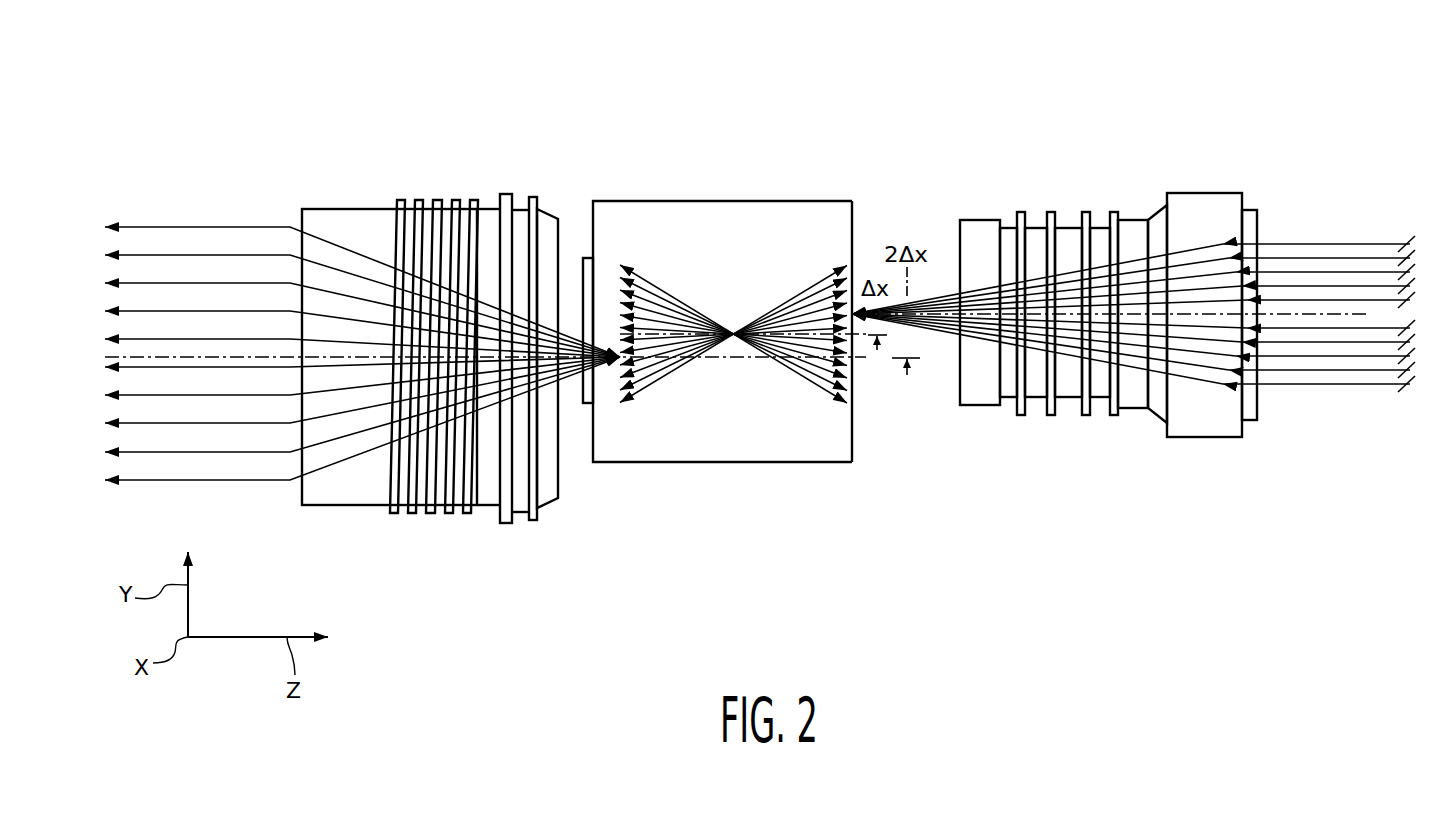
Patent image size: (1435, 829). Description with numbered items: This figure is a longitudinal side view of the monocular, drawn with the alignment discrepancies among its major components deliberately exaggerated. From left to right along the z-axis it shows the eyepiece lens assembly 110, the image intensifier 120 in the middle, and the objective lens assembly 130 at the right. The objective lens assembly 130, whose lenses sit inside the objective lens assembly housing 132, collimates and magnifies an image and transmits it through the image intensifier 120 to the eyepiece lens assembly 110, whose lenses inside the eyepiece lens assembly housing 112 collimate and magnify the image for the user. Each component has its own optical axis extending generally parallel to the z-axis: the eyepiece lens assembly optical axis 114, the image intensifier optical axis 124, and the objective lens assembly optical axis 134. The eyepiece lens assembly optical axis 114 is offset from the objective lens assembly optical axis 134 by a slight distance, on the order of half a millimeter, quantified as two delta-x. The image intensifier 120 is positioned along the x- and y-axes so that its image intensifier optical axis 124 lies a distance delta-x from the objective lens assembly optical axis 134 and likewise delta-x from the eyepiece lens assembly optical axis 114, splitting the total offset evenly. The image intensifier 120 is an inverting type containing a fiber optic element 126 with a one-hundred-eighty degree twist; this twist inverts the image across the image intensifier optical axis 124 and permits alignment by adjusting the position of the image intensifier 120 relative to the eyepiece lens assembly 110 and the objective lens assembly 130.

The eyepiece lens assembly 110 is at (352, 209).
The eyepiece lens assembly housing 112 is at (490, 209).
The eyepiece lens assembly optical axis 114 is at (248, 352).
The image intensifier 120 is at (600, 201).
The image intensifier optical axis 124 is at (832, 334).
The fiber optic element 126 is at (853, 390).
The objective lens assembly 130 is at (1034, 226).
The objective lens assembly housing 132 is at (1135, 220).
The objective lens assembly optical axis 134 is at (1335, 315).